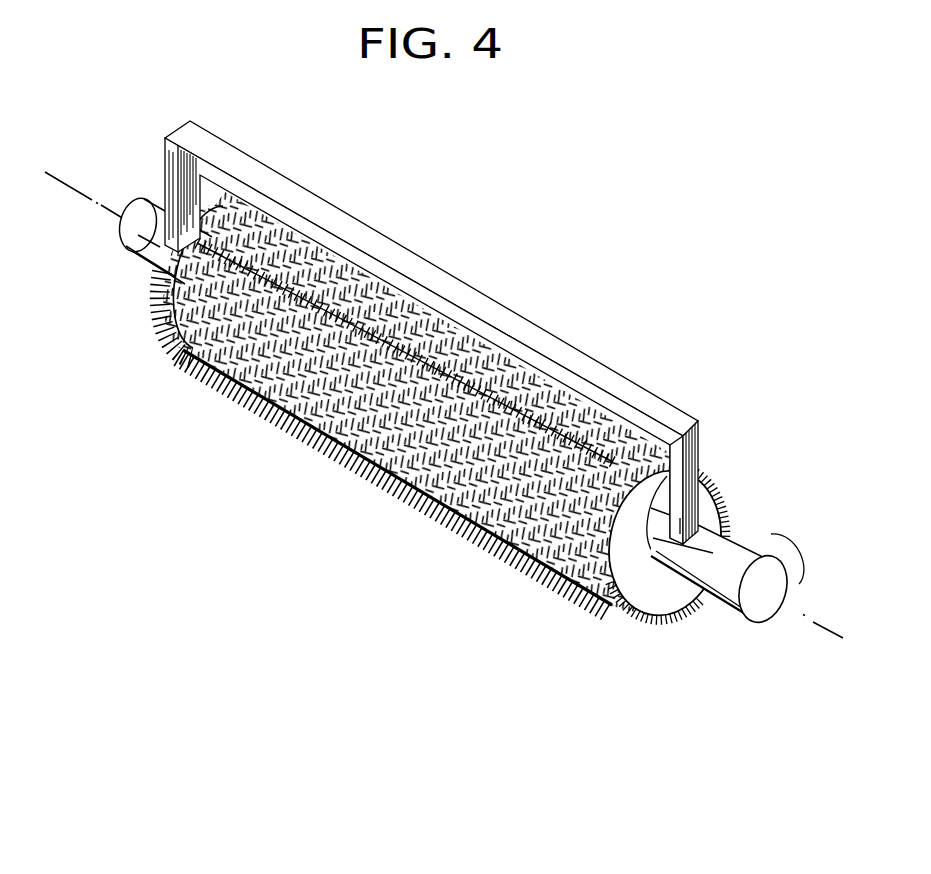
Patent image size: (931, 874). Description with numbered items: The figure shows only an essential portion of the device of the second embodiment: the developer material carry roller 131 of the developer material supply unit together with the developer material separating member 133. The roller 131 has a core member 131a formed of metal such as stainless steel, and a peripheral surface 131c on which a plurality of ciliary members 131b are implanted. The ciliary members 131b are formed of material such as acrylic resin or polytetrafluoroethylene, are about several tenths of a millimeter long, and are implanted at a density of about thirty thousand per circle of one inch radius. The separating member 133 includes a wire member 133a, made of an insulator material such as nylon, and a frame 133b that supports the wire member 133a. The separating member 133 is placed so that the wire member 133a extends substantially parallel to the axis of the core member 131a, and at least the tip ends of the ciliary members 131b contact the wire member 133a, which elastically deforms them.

The developer material carry roller 131 is at (738, 497).
The core member 131a is at (710, 577).
The ciliary members 131b is at (619, 619).
The peripheral surface 131c is at (647, 618).
The developer material separating member 133 is at (845, 402).
The wire member 133a is at (603, 598).
The frame 133b is at (690, 453).